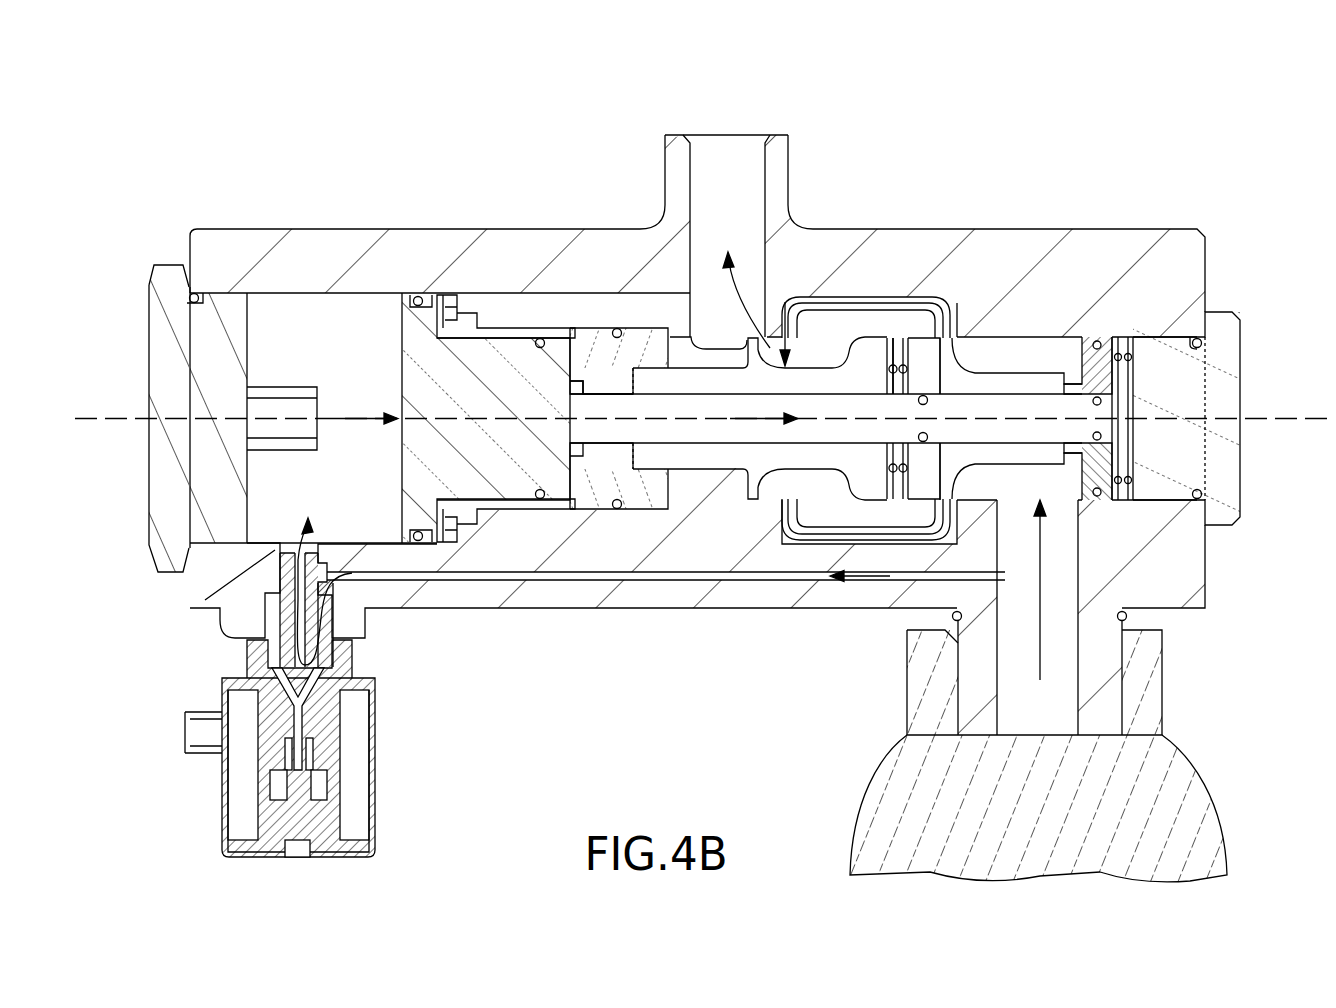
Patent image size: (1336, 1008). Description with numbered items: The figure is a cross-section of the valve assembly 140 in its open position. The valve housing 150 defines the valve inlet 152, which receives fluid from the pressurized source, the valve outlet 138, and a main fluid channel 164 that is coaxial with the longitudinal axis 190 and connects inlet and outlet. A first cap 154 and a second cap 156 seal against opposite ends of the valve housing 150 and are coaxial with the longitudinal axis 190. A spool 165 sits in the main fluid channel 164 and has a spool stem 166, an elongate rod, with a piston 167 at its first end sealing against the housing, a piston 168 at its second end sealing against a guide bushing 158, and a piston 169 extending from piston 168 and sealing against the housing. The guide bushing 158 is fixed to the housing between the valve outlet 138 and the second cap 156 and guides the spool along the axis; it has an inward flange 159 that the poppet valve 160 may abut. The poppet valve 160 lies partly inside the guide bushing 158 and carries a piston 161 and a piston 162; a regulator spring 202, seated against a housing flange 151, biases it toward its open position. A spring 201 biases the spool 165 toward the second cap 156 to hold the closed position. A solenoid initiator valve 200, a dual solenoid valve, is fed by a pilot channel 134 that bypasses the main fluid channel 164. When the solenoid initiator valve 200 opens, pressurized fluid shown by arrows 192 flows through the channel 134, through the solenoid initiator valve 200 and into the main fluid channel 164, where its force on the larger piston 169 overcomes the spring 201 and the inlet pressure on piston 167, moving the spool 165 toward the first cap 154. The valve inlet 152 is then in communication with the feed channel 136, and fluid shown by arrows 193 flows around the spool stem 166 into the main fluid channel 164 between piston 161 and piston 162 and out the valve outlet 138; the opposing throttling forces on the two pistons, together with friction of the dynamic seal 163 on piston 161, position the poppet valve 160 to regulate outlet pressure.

The valve assembly 140 is at (702, 462).
The valve outlet 138 is at (752, 135).
The piston 169 is at (432, 295).
The flange 159 is at (573, 382).
The guide bushing 158 is at (590, 348).
The poppet valve 160 is at (695, 385).
The channel 136 is at (828, 300).
The piston 161 is at (858, 343).
The arrows 193 is at (892, 298).
The regulator spring 202 is at (897, 365).
The flange 151 is at (937, 367).
The valve housing 150 is at (696, 435).
The piston 167 is at (1097, 340).
The spring 201 is at (1135, 355).
The first cap 154 is at (1237, 380).
The second cap 156 is at (168, 355).
The piston 168 is at (497, 345).
The spool 165 is at (492, 418).
The arrows 192 is at (357, 428).
The spool stem 166 is at (700, 446).
The piston 162 is at (757, 497).
The seal 163 is at (870, 495).
The main fluid channel 164 is at (1072, 474).
The channel 134 is at (663, 610).
The valve inlet 152 is at (1020, 733).
The solenoid initiator valve 200 is at (205, 801).
The longitudinal axis 190 is at (1300, 423).